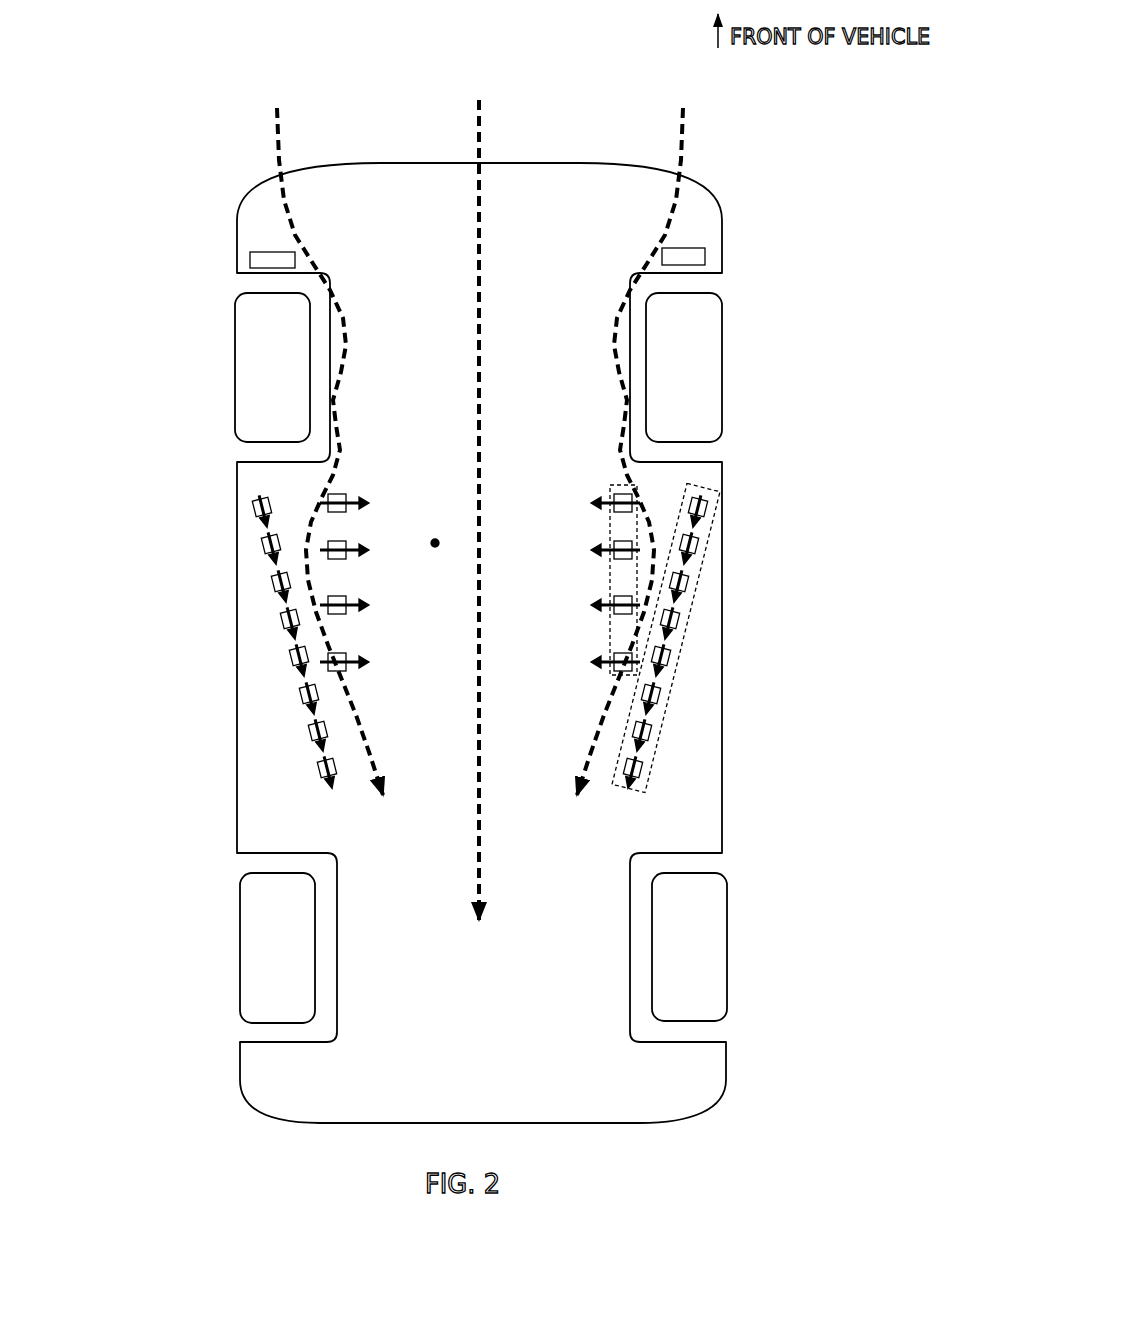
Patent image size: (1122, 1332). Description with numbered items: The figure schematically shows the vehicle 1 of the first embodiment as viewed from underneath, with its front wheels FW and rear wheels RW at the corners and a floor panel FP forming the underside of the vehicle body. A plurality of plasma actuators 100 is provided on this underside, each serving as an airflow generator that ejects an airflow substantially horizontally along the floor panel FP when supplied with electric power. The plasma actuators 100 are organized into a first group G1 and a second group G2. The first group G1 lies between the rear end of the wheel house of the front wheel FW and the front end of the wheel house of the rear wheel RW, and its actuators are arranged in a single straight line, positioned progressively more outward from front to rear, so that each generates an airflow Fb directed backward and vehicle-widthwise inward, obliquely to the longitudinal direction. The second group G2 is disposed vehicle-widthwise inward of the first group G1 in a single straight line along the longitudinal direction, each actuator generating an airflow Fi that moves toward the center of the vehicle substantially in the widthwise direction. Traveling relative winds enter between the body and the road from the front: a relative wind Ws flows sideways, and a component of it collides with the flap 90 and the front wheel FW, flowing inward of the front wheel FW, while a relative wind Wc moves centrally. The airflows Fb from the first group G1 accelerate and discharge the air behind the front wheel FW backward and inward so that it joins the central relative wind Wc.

The vehicle 1 is at (435, 152).
The flap 90 is at (708, 258).
The front wheel FW is at (722, 355).
The rear wheel RW is at (725, 955).
The floor panel FP is at (435, 543).
The airflow Fi is at (480, 574).
The airflow Fb is at (479, 652).
The relative wind Wc is at (499, 510).
The relative wind Ws is at (499, 451).
The first group G1 is at (567, 647).
The second group G2 is at (602, 576).
The plasma actuator 100 is at (573, 644).